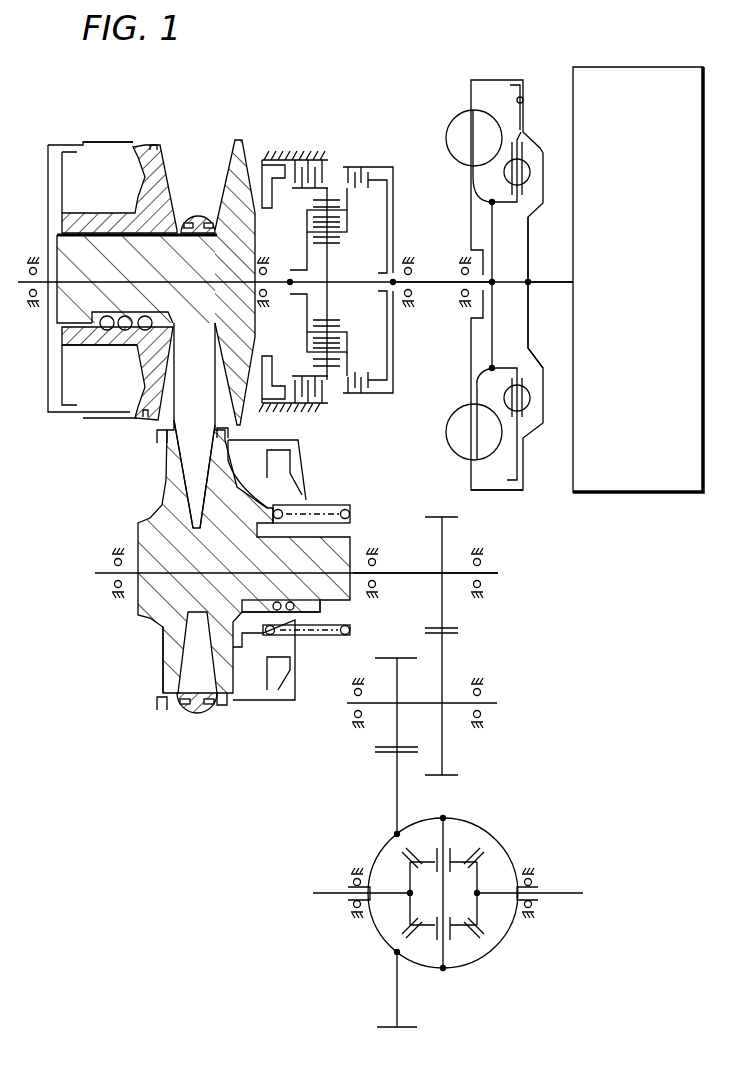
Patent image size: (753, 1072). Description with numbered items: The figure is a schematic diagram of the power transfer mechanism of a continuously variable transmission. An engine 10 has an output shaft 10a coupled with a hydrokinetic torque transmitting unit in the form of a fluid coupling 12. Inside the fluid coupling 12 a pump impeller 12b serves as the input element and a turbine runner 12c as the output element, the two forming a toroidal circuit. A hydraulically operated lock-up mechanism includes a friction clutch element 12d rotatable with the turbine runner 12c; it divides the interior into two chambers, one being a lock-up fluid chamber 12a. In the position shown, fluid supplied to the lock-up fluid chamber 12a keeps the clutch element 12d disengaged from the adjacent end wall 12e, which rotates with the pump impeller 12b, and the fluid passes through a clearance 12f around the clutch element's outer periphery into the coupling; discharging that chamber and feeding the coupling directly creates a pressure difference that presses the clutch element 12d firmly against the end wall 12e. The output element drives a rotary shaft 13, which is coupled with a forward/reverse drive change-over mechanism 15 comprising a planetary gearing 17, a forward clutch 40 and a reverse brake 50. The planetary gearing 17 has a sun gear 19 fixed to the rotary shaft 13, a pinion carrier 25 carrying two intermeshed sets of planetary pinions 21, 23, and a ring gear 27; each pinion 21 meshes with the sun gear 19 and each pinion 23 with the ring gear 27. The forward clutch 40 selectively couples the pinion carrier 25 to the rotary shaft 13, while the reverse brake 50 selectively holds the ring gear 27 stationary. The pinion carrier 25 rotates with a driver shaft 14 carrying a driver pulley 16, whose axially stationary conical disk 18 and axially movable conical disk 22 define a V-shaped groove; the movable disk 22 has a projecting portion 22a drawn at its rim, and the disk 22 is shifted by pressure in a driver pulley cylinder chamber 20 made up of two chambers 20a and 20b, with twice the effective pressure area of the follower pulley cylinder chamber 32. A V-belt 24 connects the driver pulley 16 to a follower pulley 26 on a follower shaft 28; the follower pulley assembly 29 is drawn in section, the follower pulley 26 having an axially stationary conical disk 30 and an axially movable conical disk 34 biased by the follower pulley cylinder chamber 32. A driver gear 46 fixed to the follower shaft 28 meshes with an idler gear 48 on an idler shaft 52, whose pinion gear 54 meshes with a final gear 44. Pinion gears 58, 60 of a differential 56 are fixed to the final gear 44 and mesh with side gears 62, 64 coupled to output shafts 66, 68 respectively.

The engine 10 is at (647, 63).
The output shaft 10a is at (552, 287).
The fluid coupling 12 is at (503, 75).
The lock-up fluid chamber 12a is at (517, 348).
The pump impeller 12b is at (450, 433).
The turbine runner 12c is at (493, 441).
The friction clutch element 12d is at (530, 118).
The end wall 12e is at (523, 92).
The clearance 12f is at (513, 488).
The rotary shaft 13 is at (437, 285).
The driver shaft 14 is at (279, 290).
The forward/reverse drive change-over mechanism 15 is at (300, 137).
The driver pulley 16 is at (237, 125).
The planetary gearing 17 is at (373, 225).
The axially stationary conical disk 18 is at (244, 152).
The sun gear 19 is at (328, 300).
The driver pulley cylinder chamber 20 is at (82, 170).
The chamber 20a is at (55, 413).
The chamber 20b is at (133, 146).
The planetary pinion 21 is at (340, 323).
The axially movable conical disk 22 is at (160, 146).
The hub projection 22a is at (156, 152).
The planetary pinion 23 is at (340, 359).
The V-belt 24 is at (173, 413).
The pinion carrier 25 is at (307, 322).
The follower pulley 26 is at (182, 724).
The ring gear 27 is at (332, 371).
The follower shaft 28 is at (408, 577).
The output rotor 29 is at (150, 502).
The axially stationary conical disk 30 is at (170, 649).
The follower pulley cylinder chamber 32 is at (252, 684).
The axially movable conical disk 34 is at (225, 708).
The forward clutch 40 is at (368, 163).
The final gear 44 is at (403, 1028).
The driver gear 46 is at (435, 514).
The idler gear 48 is at (443, 740).
The reverse brake 50 is at (325, 168).
The idler shaft 52 is at (453, 701).
The pinion gear 54 is at (397, 728).
The differential 56 is at (507, 838).
The pinion gear 58 is at (463, 930).
The pinion gear 60 is at (427, 857).
The side gear 62 is at (410, 908).
The side gear 64 is at (478, 875).
The output shaft 66 is at (323, 895).
The output shaft 68 is at (575, 897).